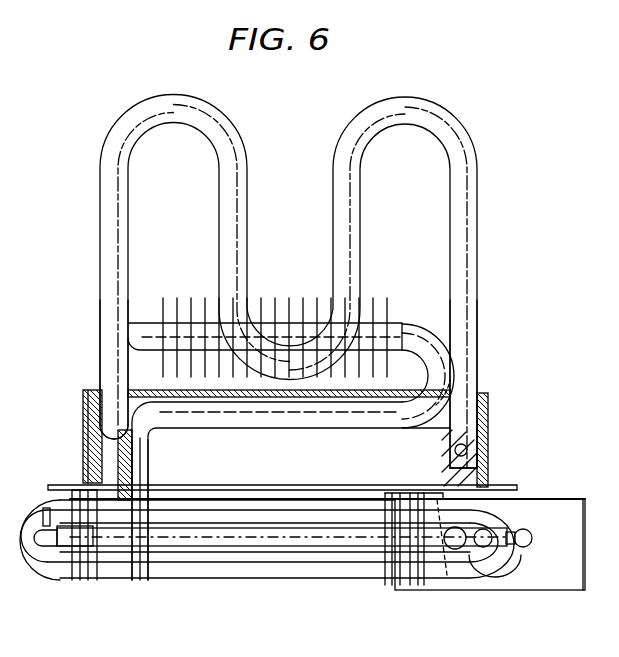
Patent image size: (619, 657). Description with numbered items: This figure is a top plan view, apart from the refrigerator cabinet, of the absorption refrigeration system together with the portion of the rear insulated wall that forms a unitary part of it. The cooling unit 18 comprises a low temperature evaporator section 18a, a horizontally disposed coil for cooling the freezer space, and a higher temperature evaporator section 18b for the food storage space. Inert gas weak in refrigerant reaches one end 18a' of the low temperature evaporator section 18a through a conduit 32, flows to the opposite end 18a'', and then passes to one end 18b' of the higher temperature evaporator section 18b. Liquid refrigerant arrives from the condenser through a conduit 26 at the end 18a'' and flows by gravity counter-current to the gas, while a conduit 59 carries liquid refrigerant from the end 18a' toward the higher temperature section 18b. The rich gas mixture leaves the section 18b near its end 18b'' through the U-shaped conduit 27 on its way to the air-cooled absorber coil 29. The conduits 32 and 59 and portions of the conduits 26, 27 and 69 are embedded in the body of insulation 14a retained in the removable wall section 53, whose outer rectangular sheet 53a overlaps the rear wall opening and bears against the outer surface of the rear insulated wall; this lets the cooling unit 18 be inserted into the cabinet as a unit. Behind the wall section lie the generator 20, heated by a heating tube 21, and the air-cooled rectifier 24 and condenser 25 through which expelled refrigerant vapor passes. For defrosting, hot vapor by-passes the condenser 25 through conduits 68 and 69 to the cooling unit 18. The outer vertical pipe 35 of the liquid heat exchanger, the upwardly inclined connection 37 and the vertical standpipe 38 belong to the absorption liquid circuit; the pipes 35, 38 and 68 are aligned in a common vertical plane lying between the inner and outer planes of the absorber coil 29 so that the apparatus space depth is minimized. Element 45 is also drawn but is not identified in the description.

The cooling unit 18 is at (86, 262).
The low temperature evaporator section 18a is at (288, 269).
The end of low temperature evaporator section 18a' is at (503, 385).
The end of low temperature evaporator section 18a'' is at (80, 369).
The higher temperature evaporator section 18b is at (261, 325).
The end of higher temperature evaporator section 18b' is at (223, 319).
The end of higher temperature evaporator section 18b'' is at (418, 343).
The conduit 59 is at (432, 405).
The body of insulation 14a is at (158, 418).
The conduit 27 is at (297, 413).
The conduit 26 is at (150, 452).
The conduit 69 is at (86, 456).
The removable wall section 53 is at (489, 425).
The outer rectangular sheet 53a is at (518, 488).
The conduit 32 is at (446, 445).
The conduit 68 is at (428, 495).
The generator 20 is at (586, 592).
The air-cooled rectifier 24 is at (66, 545).
The absorber coil 29 is at (344, 572).
The support bracket 45 is at (425, 590).
The air-cooled condenser 25 is at (508, 516).
The outer vertical pipe 35 is at (532, 543).
The heating tube 21 is at (480, 580).
The upwardly inclined connection 37 is at (512, 578).
The vertical standpipe 38 is at (448, 578).